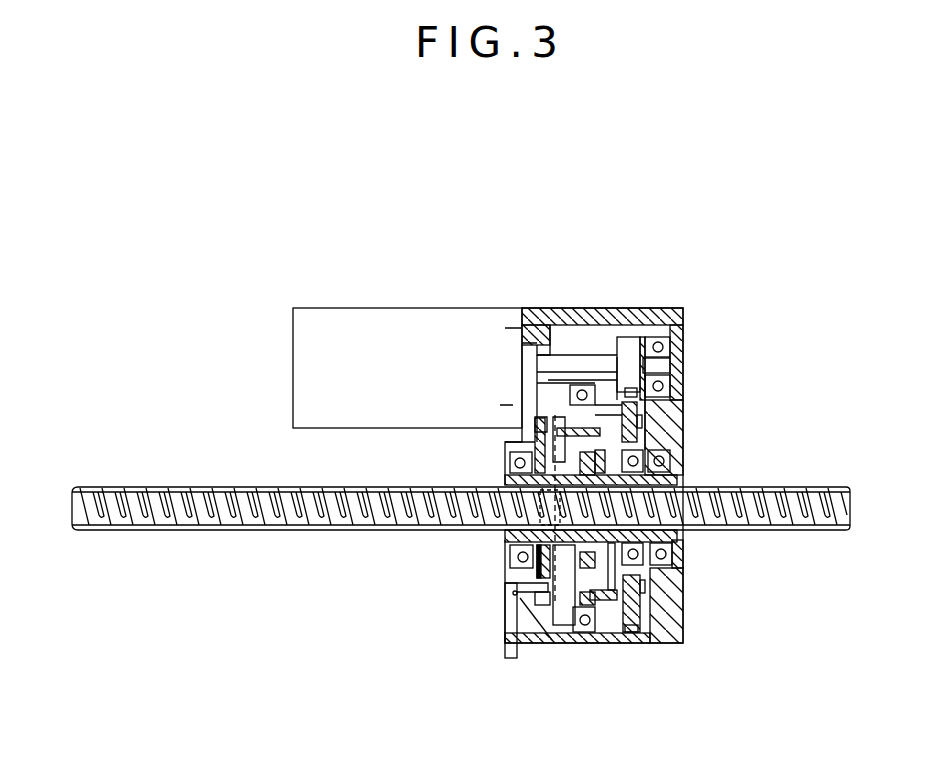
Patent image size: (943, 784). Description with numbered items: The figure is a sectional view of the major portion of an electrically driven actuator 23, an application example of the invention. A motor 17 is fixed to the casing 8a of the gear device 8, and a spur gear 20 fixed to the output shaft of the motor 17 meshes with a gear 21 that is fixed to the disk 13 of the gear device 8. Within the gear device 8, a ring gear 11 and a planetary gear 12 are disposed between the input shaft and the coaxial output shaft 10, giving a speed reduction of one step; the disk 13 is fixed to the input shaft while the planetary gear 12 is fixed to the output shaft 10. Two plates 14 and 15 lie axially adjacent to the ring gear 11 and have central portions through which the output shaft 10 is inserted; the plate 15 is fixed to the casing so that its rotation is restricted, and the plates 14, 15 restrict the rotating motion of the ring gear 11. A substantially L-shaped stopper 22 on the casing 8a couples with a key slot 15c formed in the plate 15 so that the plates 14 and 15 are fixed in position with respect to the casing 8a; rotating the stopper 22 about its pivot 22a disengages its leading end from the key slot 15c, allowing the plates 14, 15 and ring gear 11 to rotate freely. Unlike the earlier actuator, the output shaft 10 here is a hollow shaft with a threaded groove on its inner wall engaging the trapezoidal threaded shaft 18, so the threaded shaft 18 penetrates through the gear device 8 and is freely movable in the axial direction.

The electrically driven actuator 23 is at (745, 280).
The motor 17 is at (410, 325).
The casing 8a is at (580, 308).
The gear device 8 is at (677, 643).
The gear 20 is at (628, 337).
The gear 21 is at (650, 603).
The planetary gear 12 is at (650, 571).
The plate 15 is at (535, 442).
The output shaft 10 is at (505, 543).
The threaded shaft 18 is at (225, 530).
The stopper 22 is at (503, 635).
The pivot 22a is at (503, 592).
The key slot 15c is at (543, 606).
The plate 14 is at (567, 632).
The ring gear 11 is at (612, 602).
The disk 13 is at (633, 633).